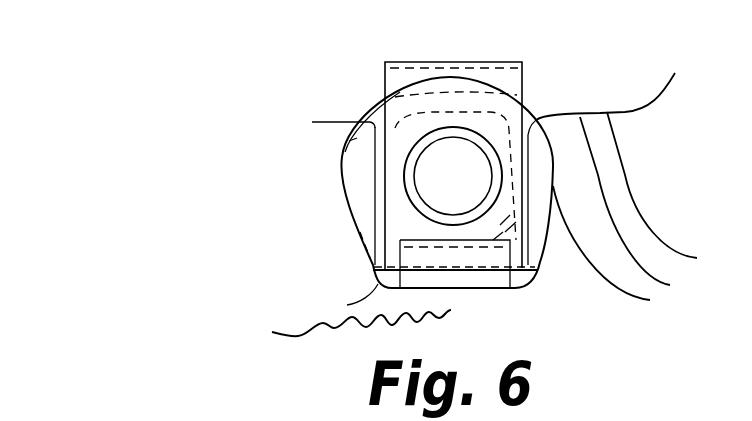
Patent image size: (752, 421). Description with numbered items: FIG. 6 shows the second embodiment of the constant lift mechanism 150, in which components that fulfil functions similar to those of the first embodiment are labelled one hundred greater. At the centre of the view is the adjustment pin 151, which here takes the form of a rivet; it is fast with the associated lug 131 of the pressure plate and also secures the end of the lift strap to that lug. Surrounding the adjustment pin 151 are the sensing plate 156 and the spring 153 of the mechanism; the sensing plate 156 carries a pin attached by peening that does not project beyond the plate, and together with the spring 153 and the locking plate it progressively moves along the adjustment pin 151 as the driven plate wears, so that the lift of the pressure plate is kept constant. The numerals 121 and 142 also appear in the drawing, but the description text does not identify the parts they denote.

The arm 121 is at (323, 143).
The lug 131 is at (366, 112).
The teeth 142 is at (323, 322).
The constant lift mechanism 150 is at (418, 57).
The adjustment pin 151 is at (473, 192).
The spring 153 is at (523, 80).
The sensing plate 156 is at (535, 112).